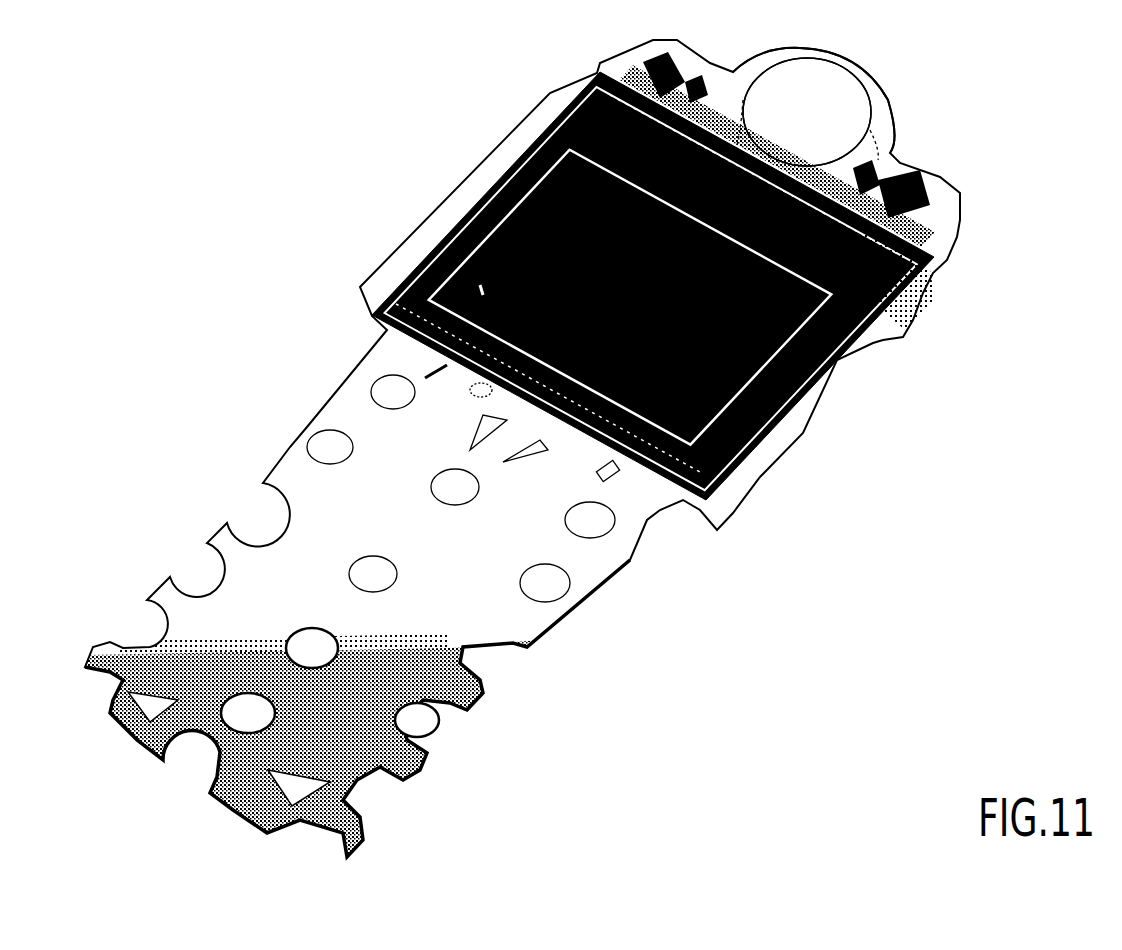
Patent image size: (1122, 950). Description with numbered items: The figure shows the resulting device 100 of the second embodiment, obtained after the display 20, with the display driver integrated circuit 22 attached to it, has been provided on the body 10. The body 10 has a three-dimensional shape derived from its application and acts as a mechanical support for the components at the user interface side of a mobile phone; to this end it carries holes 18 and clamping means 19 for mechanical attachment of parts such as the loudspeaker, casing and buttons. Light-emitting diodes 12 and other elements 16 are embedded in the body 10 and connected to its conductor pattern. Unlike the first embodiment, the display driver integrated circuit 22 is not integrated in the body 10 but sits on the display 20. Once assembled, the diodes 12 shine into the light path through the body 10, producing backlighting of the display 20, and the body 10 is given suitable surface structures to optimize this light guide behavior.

The device 100 is at (200, 225).
The body 10 is at (630, 520).
The light-emitting diodes 12 is at (920, 193).
The other elements 16 is at (868, 174).
The holes 18 is at (813, 103).
The clamping means 19 is at (888, 107).
The display 20 is at (773, 410).
The display driver integrated circuit 22 is at (803, 207).